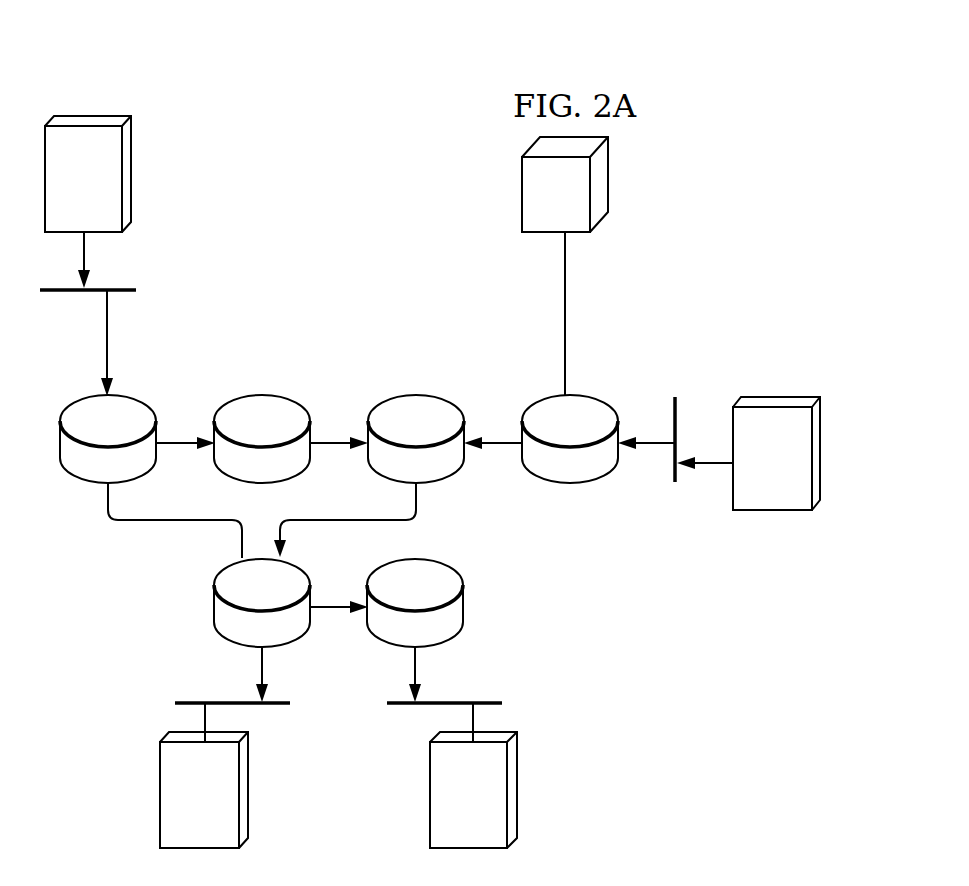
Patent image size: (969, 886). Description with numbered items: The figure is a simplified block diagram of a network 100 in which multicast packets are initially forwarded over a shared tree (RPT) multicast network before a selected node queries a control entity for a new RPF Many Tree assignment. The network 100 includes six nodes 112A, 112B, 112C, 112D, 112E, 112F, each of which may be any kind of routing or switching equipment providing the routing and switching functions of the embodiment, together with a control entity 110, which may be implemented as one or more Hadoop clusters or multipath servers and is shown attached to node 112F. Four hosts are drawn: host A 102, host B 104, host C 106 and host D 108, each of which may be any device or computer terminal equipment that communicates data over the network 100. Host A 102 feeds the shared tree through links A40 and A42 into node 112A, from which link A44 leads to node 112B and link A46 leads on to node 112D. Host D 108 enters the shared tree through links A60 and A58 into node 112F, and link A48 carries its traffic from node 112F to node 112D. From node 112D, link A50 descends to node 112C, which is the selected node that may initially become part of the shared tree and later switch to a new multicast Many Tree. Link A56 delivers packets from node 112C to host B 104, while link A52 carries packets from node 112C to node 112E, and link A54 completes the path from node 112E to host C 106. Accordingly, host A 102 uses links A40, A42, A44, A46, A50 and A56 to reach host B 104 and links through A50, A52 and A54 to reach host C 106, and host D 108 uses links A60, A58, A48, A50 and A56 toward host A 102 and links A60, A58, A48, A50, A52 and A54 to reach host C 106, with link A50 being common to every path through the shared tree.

The network 100 is at (226, 61).
The host A 102 is at (65, 209).
The host B 104 is at (182, 826).
The host C 106 is at (450, 826).
The host D 108 is at (754, 489).
The control entity 110 is at (537, 208).
The node 112A is at (99, 393).
The node 112B is at (256, 393).
The node 112C is at (213, 609).
The node 112D is at (440, 373).
The node 112E is at (463, 609).
The node 112F is at (587, 394).
The link A40 is at (83, 262).
The link A42 is at (106, 330).
The link A44 is at (178, 438).
The link A46 is at (332, 438).
The link A48 is at (494, 438).
The link A50 is at (420, 496).
The link A52 is at (336, 610).
The link A54 is at (418, 667).
The link A56 is at (259, 667).
The link A58 is at (647, 438).
The link A60 is at (702, 468).